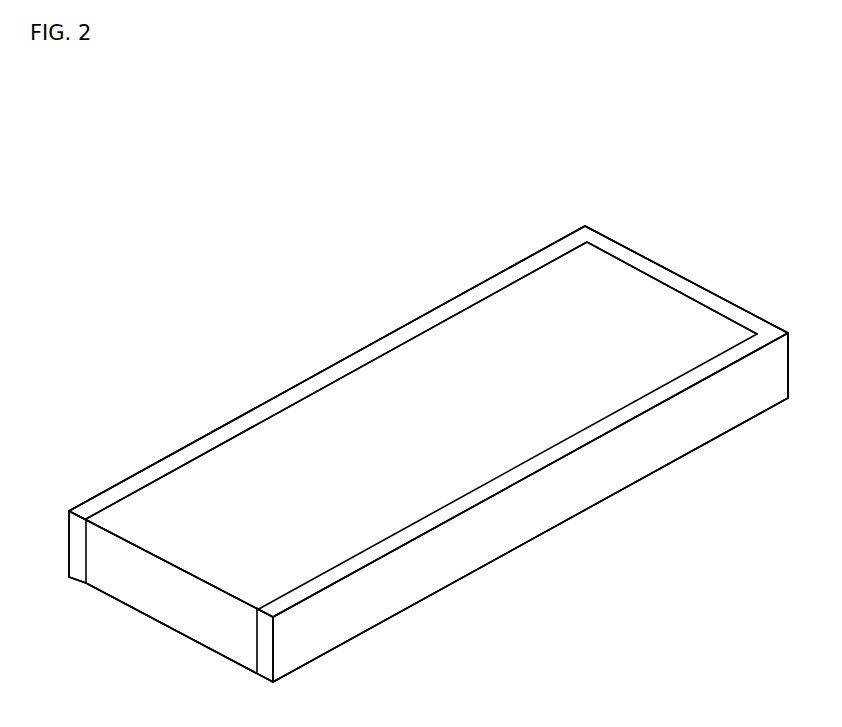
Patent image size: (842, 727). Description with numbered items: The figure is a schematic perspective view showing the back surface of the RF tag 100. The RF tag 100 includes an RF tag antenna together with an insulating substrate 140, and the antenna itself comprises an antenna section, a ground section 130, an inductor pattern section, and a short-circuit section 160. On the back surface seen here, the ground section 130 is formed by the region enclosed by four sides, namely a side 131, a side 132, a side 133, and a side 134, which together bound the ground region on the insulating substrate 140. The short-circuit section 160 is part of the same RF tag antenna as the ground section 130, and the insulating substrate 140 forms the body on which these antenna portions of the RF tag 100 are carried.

The RF tag 100 is at (623, 180).
The ground section 130 is at (390, 385).
The side 131 is at (433, 325).
The side 132 is at (683, 292).
The side 133 is at (603, 410).
The side 134 is at (257, 608).
The insulating substrate 140 is at (538, 508).
The short-circuit section 160 is at (172, 608).